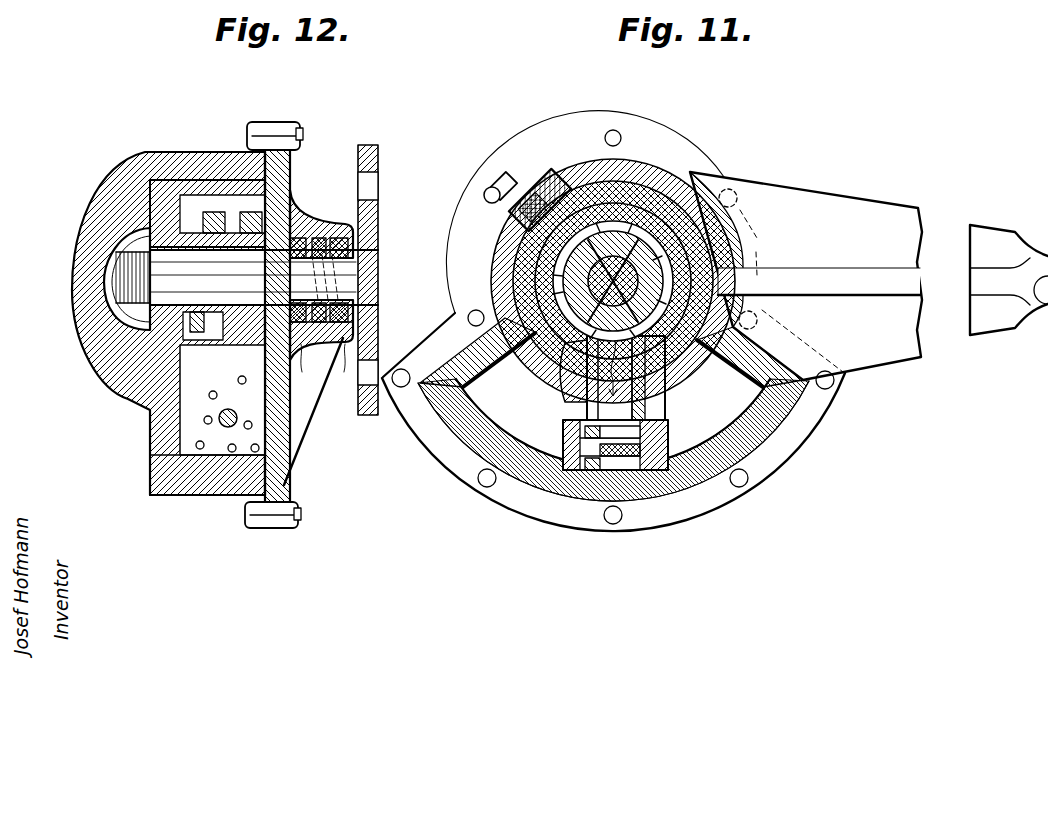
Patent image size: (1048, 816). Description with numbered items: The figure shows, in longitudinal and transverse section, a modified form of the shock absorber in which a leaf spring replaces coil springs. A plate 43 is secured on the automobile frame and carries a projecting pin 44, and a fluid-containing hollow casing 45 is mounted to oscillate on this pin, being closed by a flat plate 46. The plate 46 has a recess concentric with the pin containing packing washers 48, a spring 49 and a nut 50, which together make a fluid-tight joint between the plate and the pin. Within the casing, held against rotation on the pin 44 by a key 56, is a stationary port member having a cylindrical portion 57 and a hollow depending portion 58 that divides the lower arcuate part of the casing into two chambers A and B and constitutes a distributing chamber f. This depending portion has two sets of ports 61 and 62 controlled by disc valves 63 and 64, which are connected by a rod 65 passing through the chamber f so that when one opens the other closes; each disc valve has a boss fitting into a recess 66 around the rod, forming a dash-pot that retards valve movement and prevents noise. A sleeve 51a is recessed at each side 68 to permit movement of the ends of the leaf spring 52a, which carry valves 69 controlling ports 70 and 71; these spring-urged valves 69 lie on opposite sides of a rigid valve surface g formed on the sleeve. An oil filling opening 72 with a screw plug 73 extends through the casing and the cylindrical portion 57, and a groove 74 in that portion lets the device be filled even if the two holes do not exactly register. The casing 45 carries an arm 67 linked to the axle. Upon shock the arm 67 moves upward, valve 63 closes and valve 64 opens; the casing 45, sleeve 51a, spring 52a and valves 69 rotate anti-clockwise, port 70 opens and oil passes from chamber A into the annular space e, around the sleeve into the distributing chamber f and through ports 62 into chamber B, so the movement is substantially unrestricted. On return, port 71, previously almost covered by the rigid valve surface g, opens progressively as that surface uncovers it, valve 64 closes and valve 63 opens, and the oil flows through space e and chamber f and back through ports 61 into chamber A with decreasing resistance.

In FIG. 12, the plate 43 is at (378, 160).
In FIG. 12, the pin 44 is at (345, 272).
In FIG. 11, the pin 44 is at (565, 264).
In FIG. 12, the hollow casing 45 is at (80, 308).
In FIG. 11, the hollow casing 45 is at (600, 160).
In FIG. 12, the flat plate 46 is at (284, 486).
In FIG. 12, the packing washers 48 is at (303, 362).
In FIG. 12, the spring 49 is at (337, 360).
In FIG. 12, the nut 50 is at (352, 314).
In FIG. 12, the sleeve 51a is at (258, 232).
In FIG. 11, the sleeve 51a is at (665, 170).
In FIG. 12, the leaf spring 52a is at (216, 212).
In FIG. 11, the leaf spring 52a is at (560, 283).
In FIG. 12, the key 56 is at (150, 245).
In FIG. 12, the cylindrical portion 57 is at (183, 180).
In FIG. 11, the cylindrical portion 57 is at (640, 162).
In FIG. 12, the hollow depending portion 58 is at (150, 480).
In FIG. 11, the hollow depending portion 58 is at (640, 505).
In FIG. 12, the ports 61 is at (236, 408).
In FIG. 11, the ports 61 is at (575, 460).
In FIG. 11, the ports 62 is at (660, 402).
In FIG. 12, the disc valve 63 is at (210, 392).
In FIG. 11, the disc valve 63 is at (565, 450).
In FIG. 11, the disc valve 64 is at (660, 428).
In FIG. 12, the rod 65 is at (185, 428).
In FIG. 11, the rod 65 is at (624, 440).
In FIG. 11, the recess 66 is at (583, 420).
In FIG. 11, the arm 67 is at (888, 345).
In FIG. 11, the recess 68 is at (535, 250).
In FIG. 11, the valves 69 is at (558, 377).
In FIG. 12, the port 70 is at (225, 352).
In FIG. 11, the port 70 is at (478, 352).
In FIG. 11, the port 71 is at (718, 357).
In FIG. 11, the oil filling opening 72 is at (505, 215).
In FIG. 11, the screw plug 73 is at (515, 180).
In FIG. 11, the groove 74 is at (565, 186).
In FIG. 11, the chamber A is at (484, 395).
In FIG. 11, the chamber B is at (735, 401).
In FIG. 11, the rotor C is at (580, 274).
In FIG. 11, the annular space e is at (750, 282).
In FIG. 12, the distributing chamber f is at (185, 445).
In FIG. 11, the distributing chamber f is at (595, 478).
In FIG. 11, the rigid valve surface g is at (626, 376).